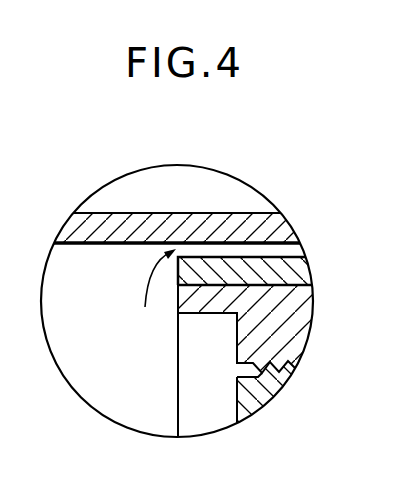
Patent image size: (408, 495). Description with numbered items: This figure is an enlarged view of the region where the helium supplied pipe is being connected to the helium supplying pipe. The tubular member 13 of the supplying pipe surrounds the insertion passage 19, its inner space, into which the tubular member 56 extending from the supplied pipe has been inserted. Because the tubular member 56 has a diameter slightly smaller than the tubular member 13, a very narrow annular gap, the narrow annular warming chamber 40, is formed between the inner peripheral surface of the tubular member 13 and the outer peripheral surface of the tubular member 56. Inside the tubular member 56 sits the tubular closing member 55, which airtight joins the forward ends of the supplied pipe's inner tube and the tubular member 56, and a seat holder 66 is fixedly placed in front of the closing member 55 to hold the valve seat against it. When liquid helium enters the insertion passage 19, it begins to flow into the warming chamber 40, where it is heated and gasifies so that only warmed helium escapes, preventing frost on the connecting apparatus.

The tubular member 13 is at (127, 223).
The narrow annular warming chamber 40 is at (303, 247).
The tubular member 56 is at (297, 270).
The tubular closing member 55 is at (293, 317).
The seat holder 66 is at (263, 397).
The insertion passage 19 is at (118, 403).